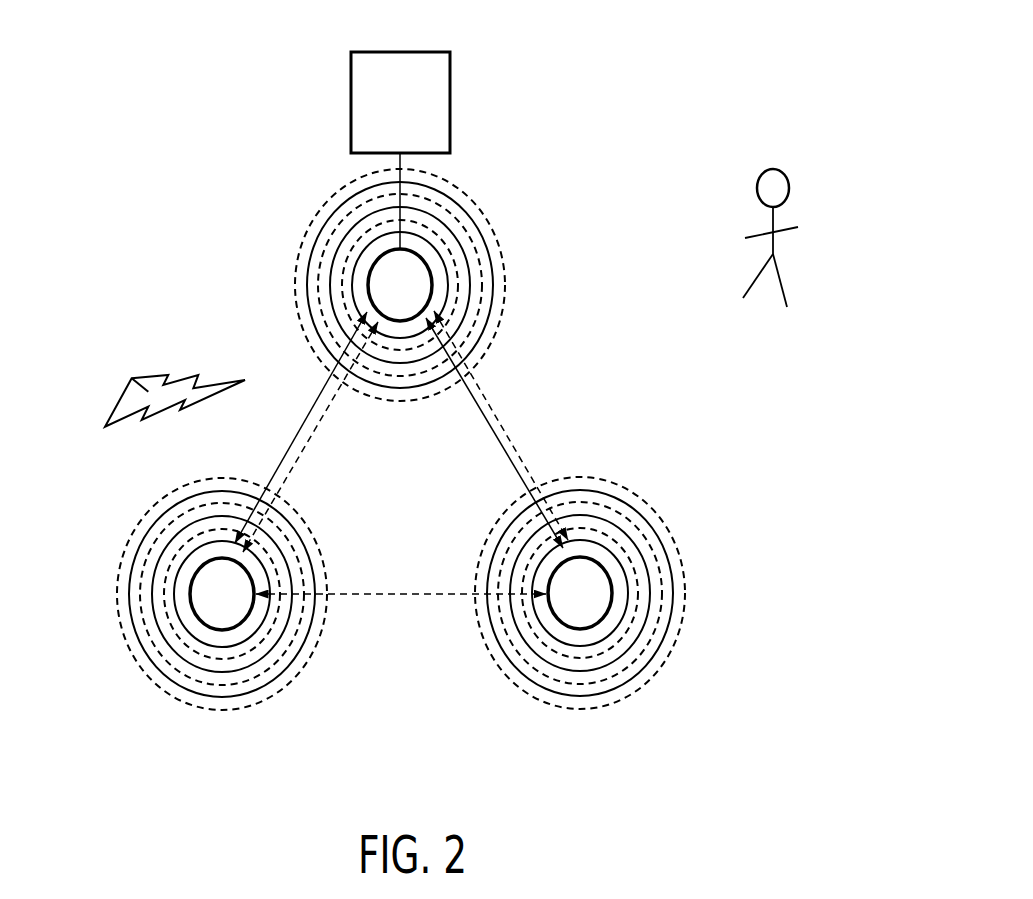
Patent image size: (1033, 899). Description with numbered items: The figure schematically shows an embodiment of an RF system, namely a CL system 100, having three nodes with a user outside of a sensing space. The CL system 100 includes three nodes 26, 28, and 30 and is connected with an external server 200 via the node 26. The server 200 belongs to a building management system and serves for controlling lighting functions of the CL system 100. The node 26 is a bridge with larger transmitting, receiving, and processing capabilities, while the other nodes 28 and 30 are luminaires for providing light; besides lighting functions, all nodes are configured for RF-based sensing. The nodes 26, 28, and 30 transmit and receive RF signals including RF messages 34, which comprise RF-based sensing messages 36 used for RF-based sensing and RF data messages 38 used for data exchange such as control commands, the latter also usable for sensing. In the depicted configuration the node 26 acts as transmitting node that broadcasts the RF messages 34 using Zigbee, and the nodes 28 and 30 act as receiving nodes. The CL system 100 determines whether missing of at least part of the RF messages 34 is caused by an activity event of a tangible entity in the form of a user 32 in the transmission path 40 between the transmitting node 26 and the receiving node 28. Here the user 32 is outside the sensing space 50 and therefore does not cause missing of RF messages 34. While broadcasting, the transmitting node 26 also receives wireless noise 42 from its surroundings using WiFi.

The external server 200 is at (450, 95).
The node 26 is at (368, 278).
The node 28 is at (614, 593).
The node 30 is at (191, 569).
The user 32 is at (775, 170).
The RF messages 34 is at (510, 237).
The RF-based sensing messages 36 is at (497, 283).
The RF data messages 38 is at (474, 200).
The transmission path 40 is at (525, 349).
The wireless noise 42 is at (131, 378).
The sensing space 50 is at (430, 442).
The CL system 100 is at (586, 350).